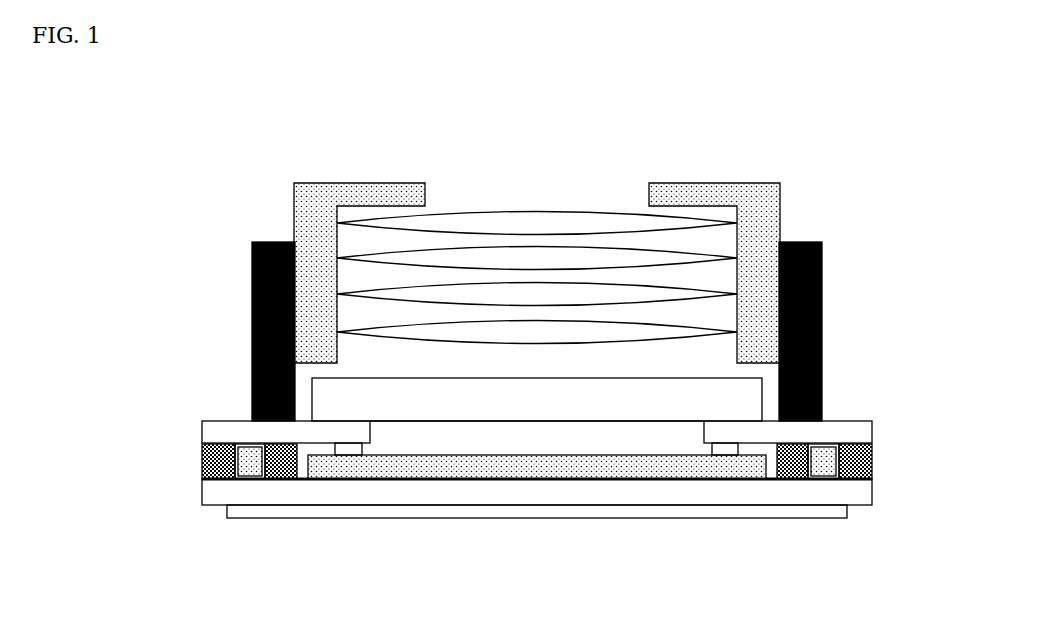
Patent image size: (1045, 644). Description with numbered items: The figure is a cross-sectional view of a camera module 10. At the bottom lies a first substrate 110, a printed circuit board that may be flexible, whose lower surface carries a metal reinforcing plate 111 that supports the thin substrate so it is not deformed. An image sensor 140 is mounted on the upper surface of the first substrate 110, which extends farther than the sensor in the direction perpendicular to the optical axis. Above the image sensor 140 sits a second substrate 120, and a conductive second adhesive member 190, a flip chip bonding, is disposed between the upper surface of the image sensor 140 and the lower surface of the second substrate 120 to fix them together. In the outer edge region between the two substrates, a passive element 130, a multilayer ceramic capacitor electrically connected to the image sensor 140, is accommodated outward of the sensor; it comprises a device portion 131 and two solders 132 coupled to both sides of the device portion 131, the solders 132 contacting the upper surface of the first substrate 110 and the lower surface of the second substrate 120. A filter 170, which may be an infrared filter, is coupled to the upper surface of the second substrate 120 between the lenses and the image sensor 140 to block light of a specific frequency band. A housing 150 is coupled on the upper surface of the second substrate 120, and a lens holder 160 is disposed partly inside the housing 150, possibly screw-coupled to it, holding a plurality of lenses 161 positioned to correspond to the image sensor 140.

The camera module 10 is at (202, 127).
The first substrate 110 is at (593, 492).
The reinforcing plate 111 is at (505, 514).
The second substrate 120 is at (228, 428).
The passive element 130 is at (856, 478).
The device portion 131 is at (245, 465).
The solder 132 is at (213, 457).
The image sensor 140 is at (690, 467).
The housing 150 is at (823, 315).
The lens holder 160 is at (767, 233).
The lens 161 is at (580, 218).
The filter 170 is at (443, 421).
The second adhesive member 190 is at (343, 452).